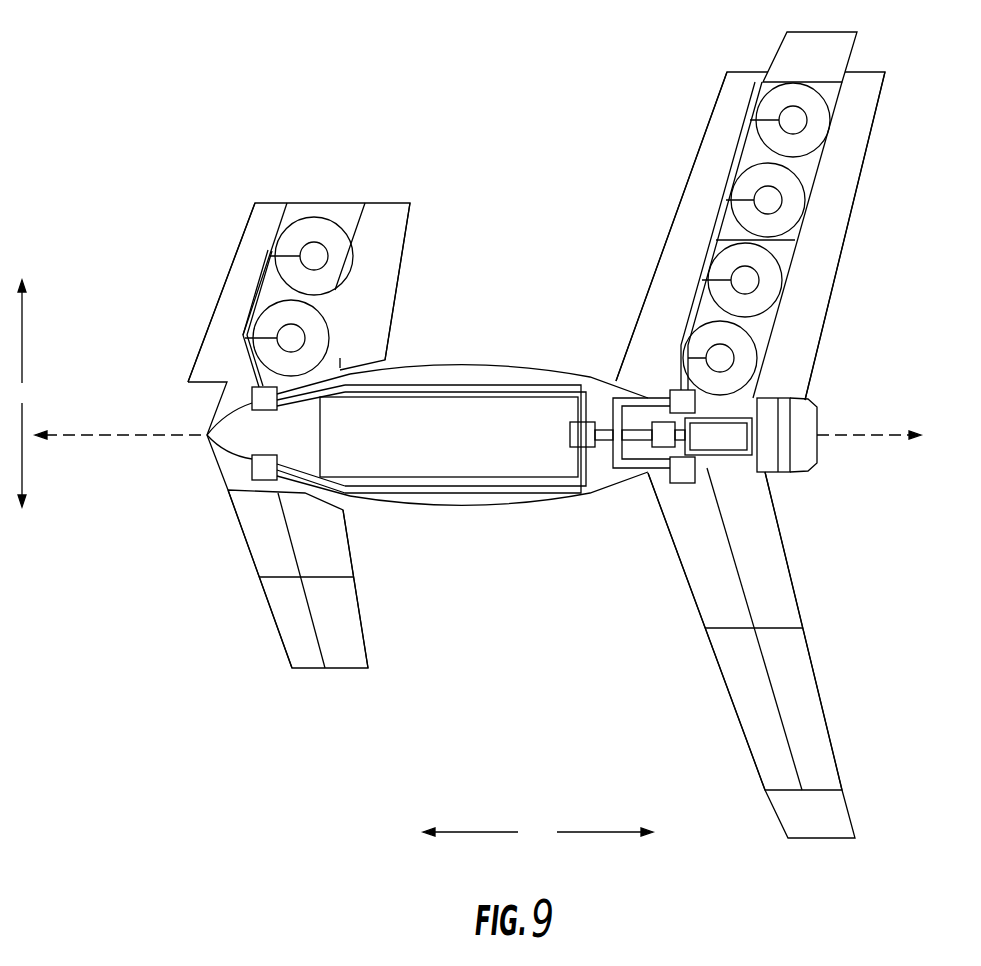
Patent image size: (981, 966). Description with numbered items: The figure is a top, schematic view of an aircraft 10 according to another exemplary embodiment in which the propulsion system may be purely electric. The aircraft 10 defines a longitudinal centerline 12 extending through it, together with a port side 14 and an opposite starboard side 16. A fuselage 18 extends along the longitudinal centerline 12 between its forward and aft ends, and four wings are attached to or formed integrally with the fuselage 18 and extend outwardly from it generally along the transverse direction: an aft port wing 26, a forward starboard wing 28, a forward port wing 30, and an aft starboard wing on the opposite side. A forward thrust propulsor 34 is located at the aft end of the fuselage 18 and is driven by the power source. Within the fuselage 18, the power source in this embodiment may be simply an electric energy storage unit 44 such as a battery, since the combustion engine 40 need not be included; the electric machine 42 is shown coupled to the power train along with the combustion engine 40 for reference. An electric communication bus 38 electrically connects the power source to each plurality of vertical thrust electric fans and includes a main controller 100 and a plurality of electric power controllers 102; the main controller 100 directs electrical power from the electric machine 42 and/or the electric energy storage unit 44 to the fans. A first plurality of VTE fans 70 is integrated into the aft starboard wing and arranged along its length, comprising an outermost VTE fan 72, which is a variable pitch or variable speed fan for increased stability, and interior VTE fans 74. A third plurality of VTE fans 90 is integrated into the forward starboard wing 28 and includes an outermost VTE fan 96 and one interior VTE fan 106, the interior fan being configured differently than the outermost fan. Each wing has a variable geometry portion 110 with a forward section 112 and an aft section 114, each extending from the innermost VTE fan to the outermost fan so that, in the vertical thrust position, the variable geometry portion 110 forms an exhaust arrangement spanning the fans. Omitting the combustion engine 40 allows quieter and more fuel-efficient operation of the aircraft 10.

The aircraft 10 is at (518, 78).
The longitudinal centerline 12 is at (104, 437).
The port side 14 is at (527, 700).
The starboard side 16 is at (562, 205).
The fuselage 18 is at (407, 462).
The aft port wing 26 is at (817, 820).
The forward starboard wing 28 is at (347, 165).
The forward port wing 30 is at (337, 683).
The forward thrust propulsor 34 is at (805, 420).
The electric communication bus 38 is at (597, 362).
The combustion engine 40 is at (708, 440).
The electric machine 42 is at (667, 427).
The electric energy storage unit 44 is at (467, 445).
The first plurality of VTE fans 70 is at (821, 66).
The outermost VTE fan 72 is at (813, 127).
The interior VTE fan 74 is at (767, 295).
The third plurality of VTE fans 90 is at (307, 206).
The outermost VTE fan 96 is at (330, 242).
The main controller 100 is at (578, 433).
The electric power controller 102 is at (682, 398).
The interior VTE fan 106 is at (316, 337).
The variable geometry portion 110 is at (538, 431).
The forward section 112 is at (235, 268).
The aft section 114 is at (395, 258).